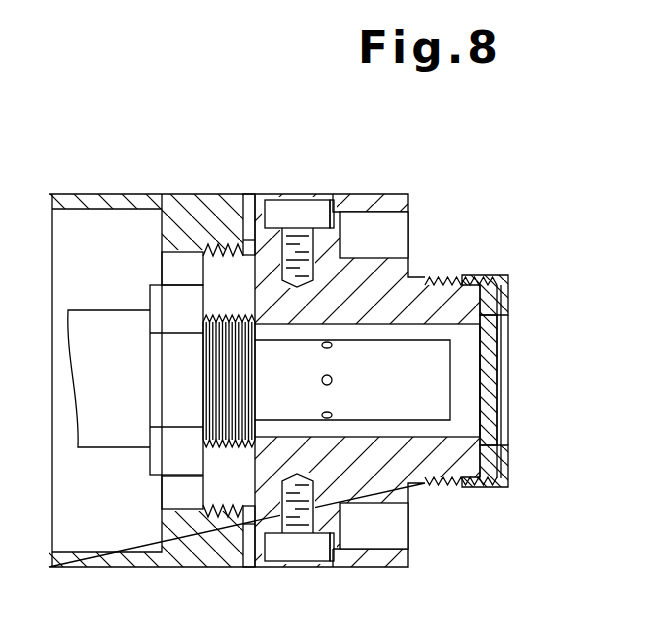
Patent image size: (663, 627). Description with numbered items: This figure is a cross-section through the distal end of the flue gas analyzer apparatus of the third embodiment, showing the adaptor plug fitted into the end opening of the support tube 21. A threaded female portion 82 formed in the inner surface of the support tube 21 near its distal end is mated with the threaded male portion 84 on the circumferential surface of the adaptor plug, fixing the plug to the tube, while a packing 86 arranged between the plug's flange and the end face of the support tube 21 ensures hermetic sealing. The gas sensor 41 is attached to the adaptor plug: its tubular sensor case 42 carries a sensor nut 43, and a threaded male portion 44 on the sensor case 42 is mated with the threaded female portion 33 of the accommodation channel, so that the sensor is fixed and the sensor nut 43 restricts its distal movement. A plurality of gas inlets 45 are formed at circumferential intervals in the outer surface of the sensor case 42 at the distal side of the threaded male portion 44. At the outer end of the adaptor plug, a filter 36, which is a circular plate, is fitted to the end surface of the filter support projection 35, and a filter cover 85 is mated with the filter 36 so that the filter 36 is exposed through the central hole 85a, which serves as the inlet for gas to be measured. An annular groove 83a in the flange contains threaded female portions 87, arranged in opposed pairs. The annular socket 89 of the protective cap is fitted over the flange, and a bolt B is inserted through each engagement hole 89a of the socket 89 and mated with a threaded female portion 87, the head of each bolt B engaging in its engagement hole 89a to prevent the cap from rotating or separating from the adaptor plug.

The support tube 21 is at (78, 193).
The gas sensor 41 is at (133, 364).
The sensor case 42 is at (111, 440).
The sensor nut 43 is at (170, 300).
The threaded male portion 44 is at (236, 450).
The threaded female portion 33 is at (230, 316).
The threaded female portion 82 is at (224, 260).
The threaded male portion 84 is at (200, 243).
The packing 86 is at (250, 202).
The annular groove 83a is at (276, 215).
The threaded female portion 87 is at (310, 284).
The annular socket 89 is at (396, 194).
The engagement hole 89a is at (328, 196).
The bolt B is at (313, 240).
The filter support projection 35 is at (428, 276).
The filter 36 is at (490, 430).
The filter cover 85 is at (508, 466).
The central hole 85a is at (505, 325).
The gas inlets 45 is at (333, 413).